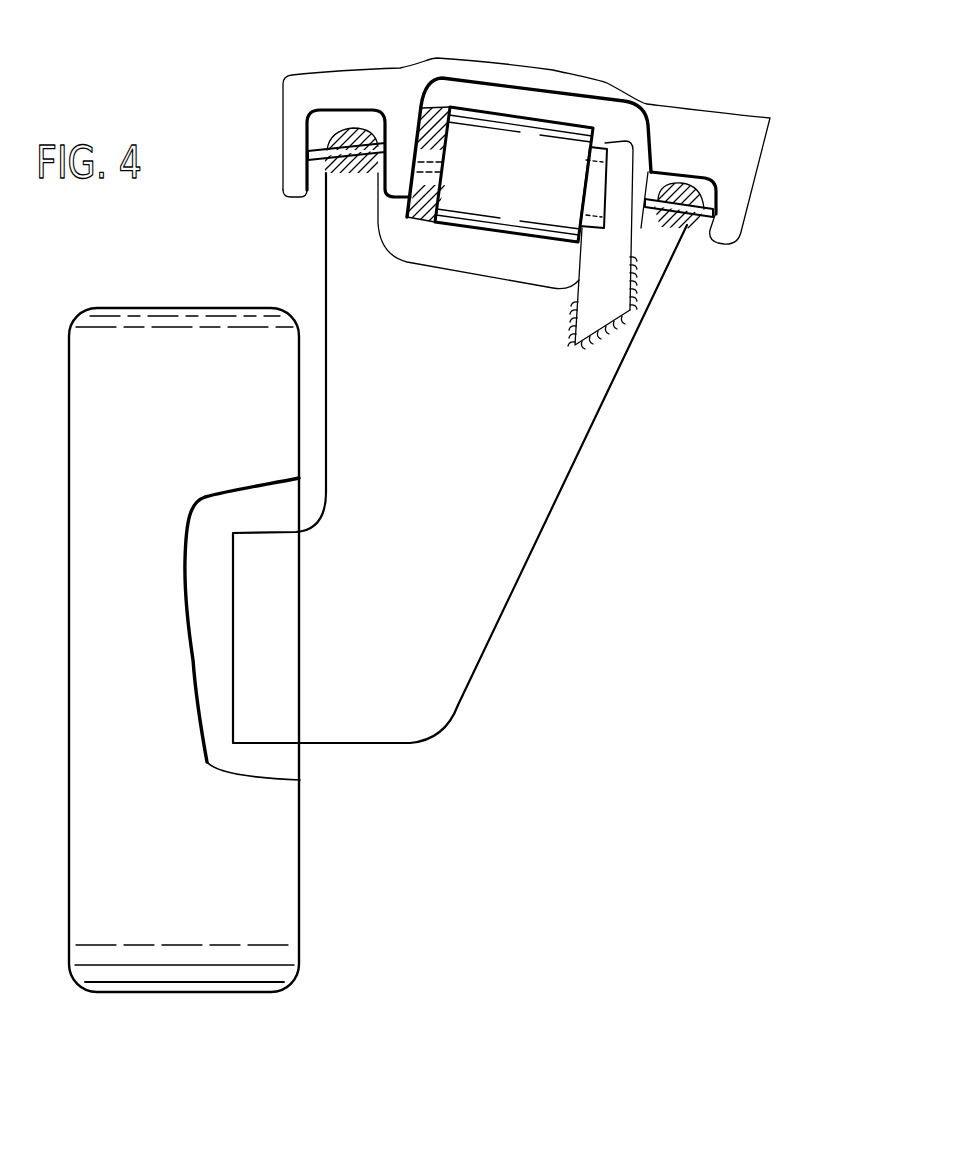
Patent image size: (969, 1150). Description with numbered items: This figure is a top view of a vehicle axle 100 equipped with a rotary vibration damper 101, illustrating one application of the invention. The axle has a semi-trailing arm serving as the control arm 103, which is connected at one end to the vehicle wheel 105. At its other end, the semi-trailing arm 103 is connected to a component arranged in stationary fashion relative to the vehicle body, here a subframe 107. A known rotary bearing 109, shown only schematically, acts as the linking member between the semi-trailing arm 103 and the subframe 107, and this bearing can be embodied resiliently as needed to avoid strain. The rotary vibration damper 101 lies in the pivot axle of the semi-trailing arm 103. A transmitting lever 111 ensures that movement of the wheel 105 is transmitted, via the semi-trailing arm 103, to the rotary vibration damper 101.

The vehicle axle 100 is at (624, 675).
The rotary vibration damper 101 is at (563, 137).
The control arm 103 is at (690, 511).
The vehicle wheel 105 is at (272, 850).
The subframe 107 is at (733, 163).
The rotary bearing 109 is at (688, 233).
The transmitting lever 111 is at (605, 308).